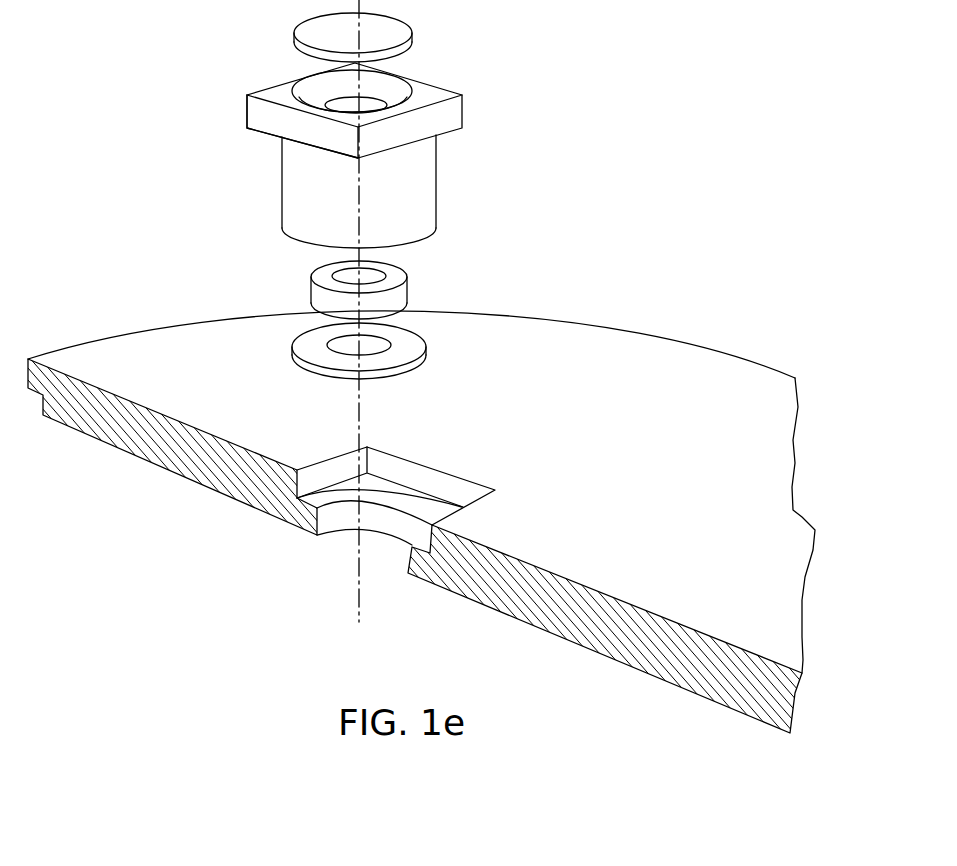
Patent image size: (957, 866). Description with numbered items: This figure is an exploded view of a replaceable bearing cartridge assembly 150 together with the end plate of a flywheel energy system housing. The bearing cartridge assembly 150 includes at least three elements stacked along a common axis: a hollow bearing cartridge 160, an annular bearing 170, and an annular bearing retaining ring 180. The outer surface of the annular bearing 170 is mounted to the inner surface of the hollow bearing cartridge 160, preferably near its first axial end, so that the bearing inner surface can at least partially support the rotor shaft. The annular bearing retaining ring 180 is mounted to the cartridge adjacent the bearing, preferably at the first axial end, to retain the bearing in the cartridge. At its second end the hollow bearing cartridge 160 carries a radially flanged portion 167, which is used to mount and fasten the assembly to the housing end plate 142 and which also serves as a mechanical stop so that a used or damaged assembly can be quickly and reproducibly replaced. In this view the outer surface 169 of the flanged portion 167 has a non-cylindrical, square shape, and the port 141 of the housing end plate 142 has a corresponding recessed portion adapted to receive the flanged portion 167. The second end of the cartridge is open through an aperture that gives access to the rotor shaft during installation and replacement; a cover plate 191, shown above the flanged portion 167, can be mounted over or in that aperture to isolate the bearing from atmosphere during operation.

The cover plate 191 is at (404, 31).
The radially flanged portion 167 is at (430, 92).
The outer surface of flanged portion 169 is at (255, 118).
The hollow bearing cartridge 160 is at (270, 194).
The bearing cartridge assembly 150 is at (532, 13).
The annular bearing 170 is at (302, 282).
The annular bearing retaining ring 180 is at (285, 342).
The port 141 is at (415, 476).
The housing end plate 142 is at (741, 589).